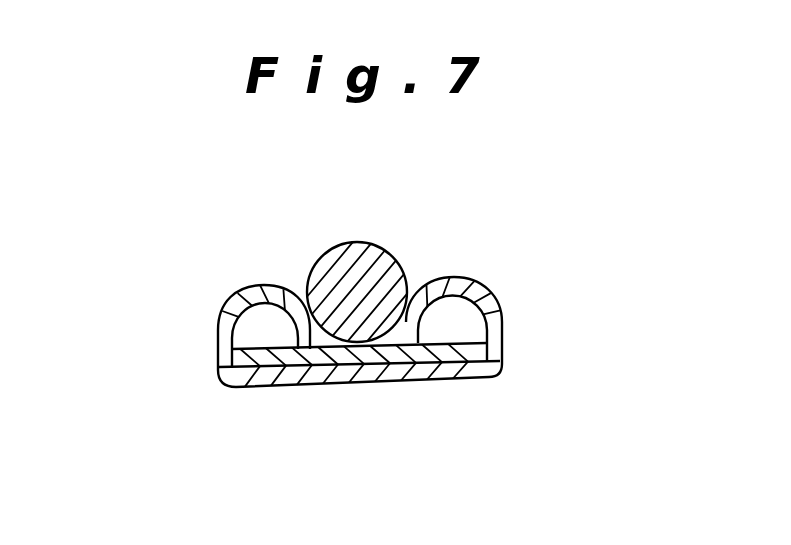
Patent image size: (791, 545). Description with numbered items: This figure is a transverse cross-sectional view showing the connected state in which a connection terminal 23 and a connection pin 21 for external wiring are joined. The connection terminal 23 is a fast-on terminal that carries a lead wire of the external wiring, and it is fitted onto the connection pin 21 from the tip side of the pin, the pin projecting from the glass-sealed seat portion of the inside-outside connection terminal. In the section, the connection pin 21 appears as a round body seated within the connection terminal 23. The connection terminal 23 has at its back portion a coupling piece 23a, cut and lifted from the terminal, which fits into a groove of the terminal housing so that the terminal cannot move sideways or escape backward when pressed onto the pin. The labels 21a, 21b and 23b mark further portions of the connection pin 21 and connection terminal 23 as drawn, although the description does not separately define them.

The connection pin for external wiring 21 is at (388, 252).
The section of holder plate 21a is at (298, 372).
The inner arch surfaces 21b is at (231, 349).
The connection terminal 23 is at (415, 383).
The coupling piece 23a is at (237, 292).
The bottom plate portion 23b is at (387, 380).